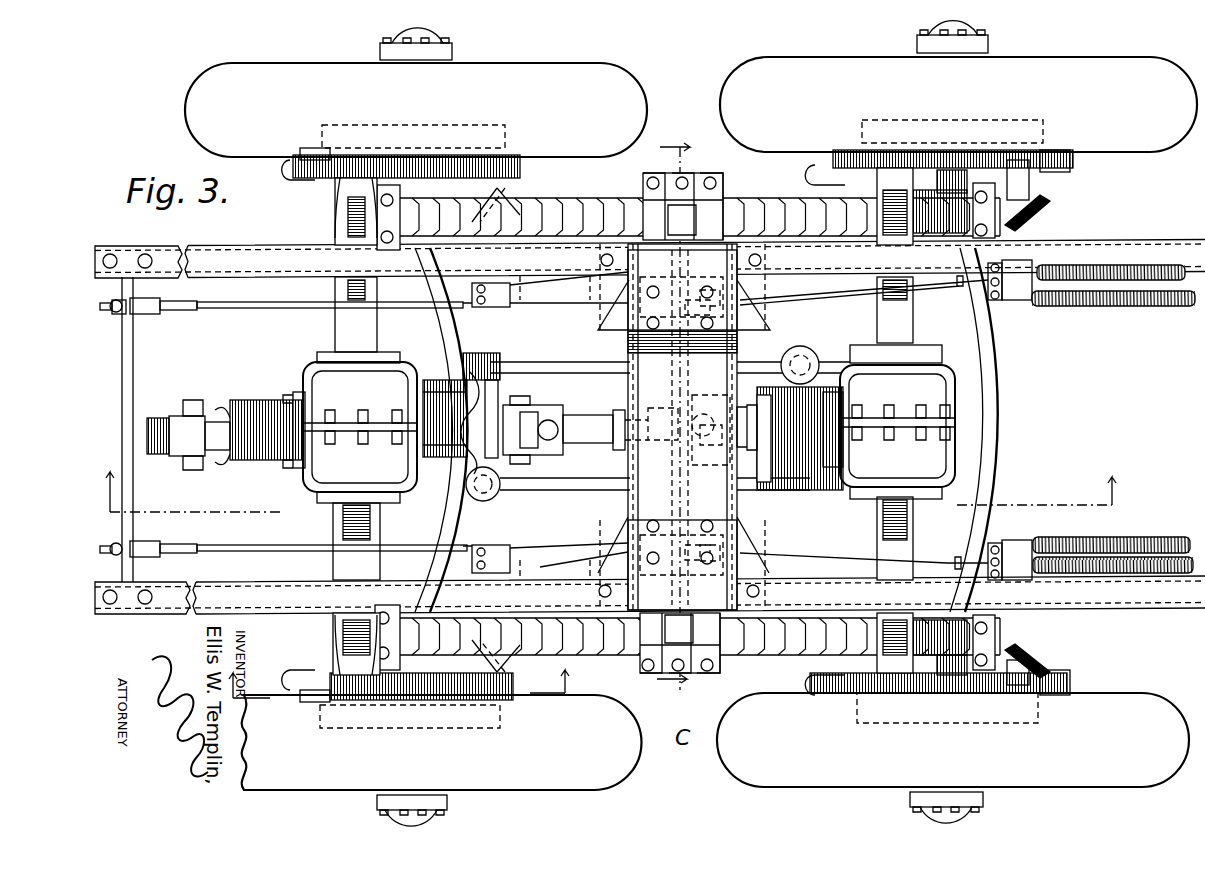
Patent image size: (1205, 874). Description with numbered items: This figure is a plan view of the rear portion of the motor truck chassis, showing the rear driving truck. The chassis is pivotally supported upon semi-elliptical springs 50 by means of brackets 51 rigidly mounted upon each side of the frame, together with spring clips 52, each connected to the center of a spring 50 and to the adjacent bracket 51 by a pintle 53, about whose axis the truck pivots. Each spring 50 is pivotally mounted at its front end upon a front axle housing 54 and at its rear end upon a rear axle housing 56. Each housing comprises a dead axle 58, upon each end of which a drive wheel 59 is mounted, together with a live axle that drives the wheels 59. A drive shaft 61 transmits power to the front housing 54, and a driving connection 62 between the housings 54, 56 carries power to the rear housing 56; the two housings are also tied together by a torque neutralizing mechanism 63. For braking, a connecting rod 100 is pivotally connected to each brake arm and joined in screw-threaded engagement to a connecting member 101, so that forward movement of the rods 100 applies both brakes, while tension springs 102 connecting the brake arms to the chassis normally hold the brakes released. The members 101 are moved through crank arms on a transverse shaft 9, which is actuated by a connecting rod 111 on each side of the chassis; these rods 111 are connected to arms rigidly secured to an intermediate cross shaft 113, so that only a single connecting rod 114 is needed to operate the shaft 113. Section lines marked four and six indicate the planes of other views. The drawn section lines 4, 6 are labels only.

The drive wheel 59 is at (730, 80).
The semi-elliptical spring 50 is at (583, 208).
The bracket 51 is at (630, 508).
The spring clip 52 is at (688, 182).
The pintle 53 is at (700, 228).
The front axle housing 54 is at (330, 482).
The rear axle housing 56 is at (862, 470).
The dead axle 58 is at (438, 512).
The drive shaft 61 is at (180, 415).
The driving connection 62 is at (590, 425).
The torque neutralizing mechanism 63 is at (525, 364).
The connecting rod 100 is at (530, 304).
The connecting member 101 is at (740, 318).
The tension spring 102 is at (1128, 306).
The connecting rod 111 is at (287, 309).
The cross shaft 113 is at (133, 354).
The connecting rod 114 is at (105, 314).
The transverse shaft 9 is at (748, 349).
The section line 4- 4 is at (615, 483).
The section line 6- 6 is at (404, 684).